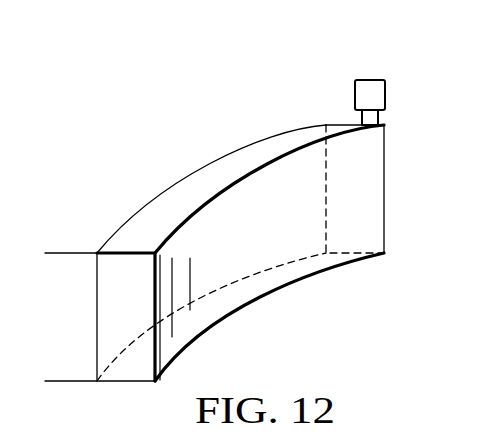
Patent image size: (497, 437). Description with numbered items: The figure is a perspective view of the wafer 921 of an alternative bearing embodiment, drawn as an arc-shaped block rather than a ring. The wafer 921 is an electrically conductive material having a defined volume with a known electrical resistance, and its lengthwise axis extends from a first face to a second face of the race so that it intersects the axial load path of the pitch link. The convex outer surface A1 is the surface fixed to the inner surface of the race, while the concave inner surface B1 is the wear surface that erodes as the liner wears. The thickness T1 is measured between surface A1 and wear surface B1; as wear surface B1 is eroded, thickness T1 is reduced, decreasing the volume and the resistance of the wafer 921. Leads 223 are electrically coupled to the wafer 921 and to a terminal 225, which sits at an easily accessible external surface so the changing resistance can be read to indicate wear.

The wafer 921 is at (224, 215).
The surface A1 is at (145, 220).
The wear surface B1 is at (238, 307).
The thickness T1 is at (58, 253).
The terminal 225 is at (371, 80).
The leads 223 is at (380, 117).